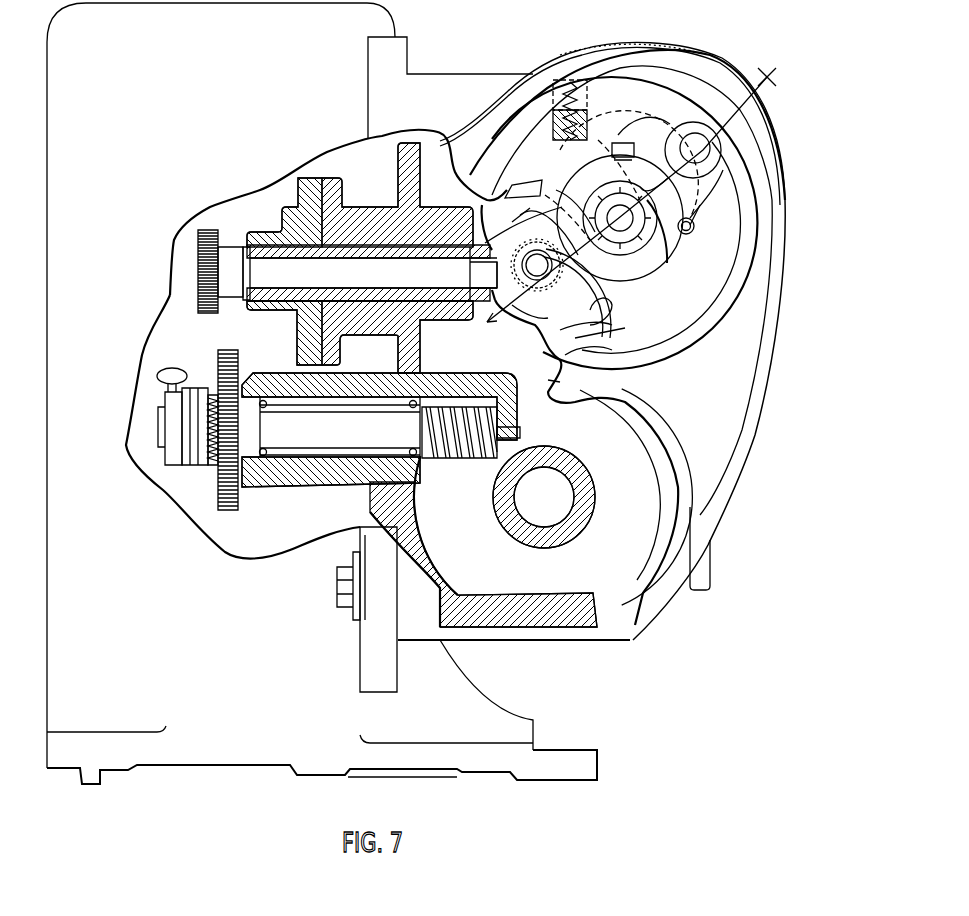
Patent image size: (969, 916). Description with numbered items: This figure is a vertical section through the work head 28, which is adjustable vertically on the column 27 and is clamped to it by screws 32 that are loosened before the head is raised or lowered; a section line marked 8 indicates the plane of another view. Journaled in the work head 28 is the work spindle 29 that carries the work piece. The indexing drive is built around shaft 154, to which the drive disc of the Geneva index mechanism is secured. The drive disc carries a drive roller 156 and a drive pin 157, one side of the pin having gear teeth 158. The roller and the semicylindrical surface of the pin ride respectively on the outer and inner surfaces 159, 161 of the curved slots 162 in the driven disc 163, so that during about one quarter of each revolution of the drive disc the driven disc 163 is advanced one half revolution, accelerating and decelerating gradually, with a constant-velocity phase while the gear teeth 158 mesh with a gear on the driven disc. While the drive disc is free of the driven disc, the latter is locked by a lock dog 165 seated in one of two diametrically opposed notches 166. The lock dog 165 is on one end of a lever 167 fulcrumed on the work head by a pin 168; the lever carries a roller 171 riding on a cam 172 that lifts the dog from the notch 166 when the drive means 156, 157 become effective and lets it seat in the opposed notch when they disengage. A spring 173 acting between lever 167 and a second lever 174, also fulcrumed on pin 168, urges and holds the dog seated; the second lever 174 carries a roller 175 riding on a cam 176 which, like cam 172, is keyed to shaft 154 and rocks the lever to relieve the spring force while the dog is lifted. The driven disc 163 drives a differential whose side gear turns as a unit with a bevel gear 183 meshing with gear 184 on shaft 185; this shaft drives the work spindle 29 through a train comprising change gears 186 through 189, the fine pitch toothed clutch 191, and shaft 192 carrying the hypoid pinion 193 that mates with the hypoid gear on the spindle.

The column 27 is at (236, 110).
The work head 28 is at (713, 425).
The work spindle 29 is at (549, 540).
The screws 32 is at (337, 588).
The shaft 154 is at (660, 255).
The drive roller 156 is at (565, 195).
The drive pin 157 is at (560, 255).
The gear teeth 158 is at (545, 247).
The outer surface 159 is at (610, 303).
The inner surface 161 is at (575, 283).
The curved slots 162 is at (600, 320).
The driven disc 163 is at (590, 345).
The lock dog 165 is at (518, 190).
The notches 166 is at (525, 213).
The lever 167 is at (652, 115).
The pin 168 is at (735, 110).
The roller 171 is at (630, 152).
The cam 172 is at (606, 135).
The spring 173 is at (603, 55).
The second lever 174 is at (668, 97).
The roller 175 is at (697, 227).
The cam 176 is at (698, 205).
The bevel gear 183 is at (537, 328).
The gear 184 is at (495, 318).
The shaft 185 is at (262, 290).
The change gear 186 is at (203, 262).
The change gear 189 is at (230, 512).
The fine pitch toothed clutch 191 is at (212, 460).
The shaft 192 is at (325, 433).
The hypoid pinion 193 is at (451, 457).
The section line 8- 8 is at (634, 209).